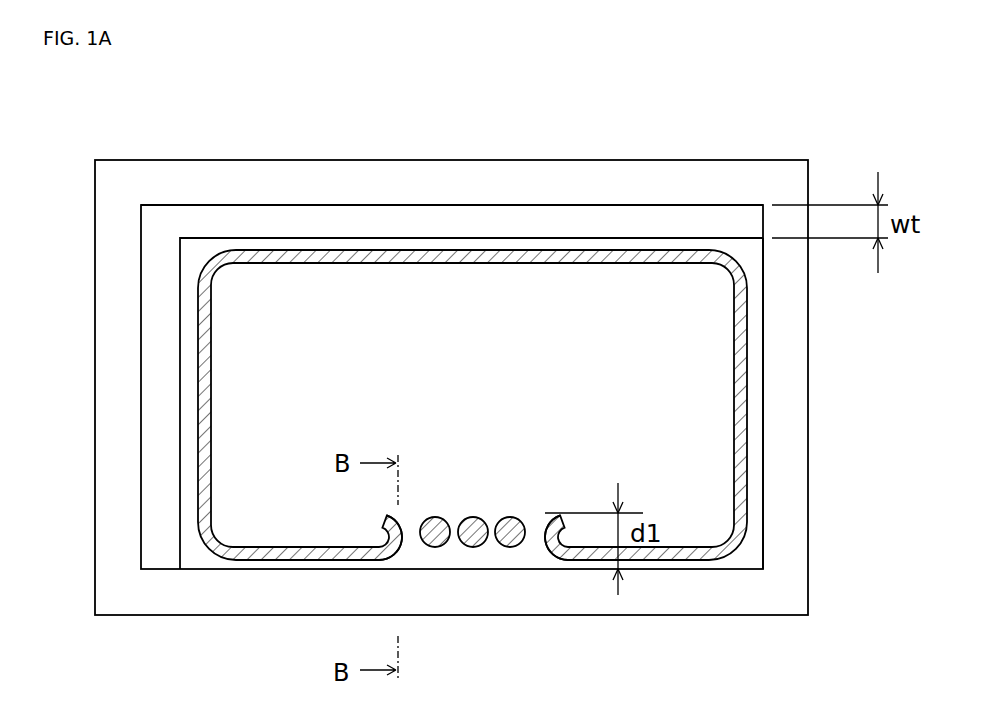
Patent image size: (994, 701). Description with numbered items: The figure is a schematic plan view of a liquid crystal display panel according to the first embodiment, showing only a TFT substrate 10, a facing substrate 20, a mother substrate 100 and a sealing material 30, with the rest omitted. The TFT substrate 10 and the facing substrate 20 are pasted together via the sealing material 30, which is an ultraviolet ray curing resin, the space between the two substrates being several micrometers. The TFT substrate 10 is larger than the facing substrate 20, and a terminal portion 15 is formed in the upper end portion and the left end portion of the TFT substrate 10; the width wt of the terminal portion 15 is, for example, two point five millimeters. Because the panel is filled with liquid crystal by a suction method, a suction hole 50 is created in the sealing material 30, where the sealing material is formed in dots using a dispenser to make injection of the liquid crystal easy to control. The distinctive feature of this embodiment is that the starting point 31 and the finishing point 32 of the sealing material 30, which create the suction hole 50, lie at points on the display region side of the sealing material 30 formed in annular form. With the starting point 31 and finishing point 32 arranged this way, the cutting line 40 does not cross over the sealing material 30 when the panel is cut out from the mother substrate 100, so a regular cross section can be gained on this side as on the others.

The mother substrate 100 is at (242, 160).
The TFT substrate 10 is at (472, 205).
The terminal portion 15 is at (569, 215).
The facing substrate 20 is at (656, 238).
The sealing material 30 is at (746, 427).
The starting point 31 is at (378, 512).
The finishing point 32 is at (562, 503).
The cutting line 40 is at (763, 500).
The suction hole 50 is at (531, 533).